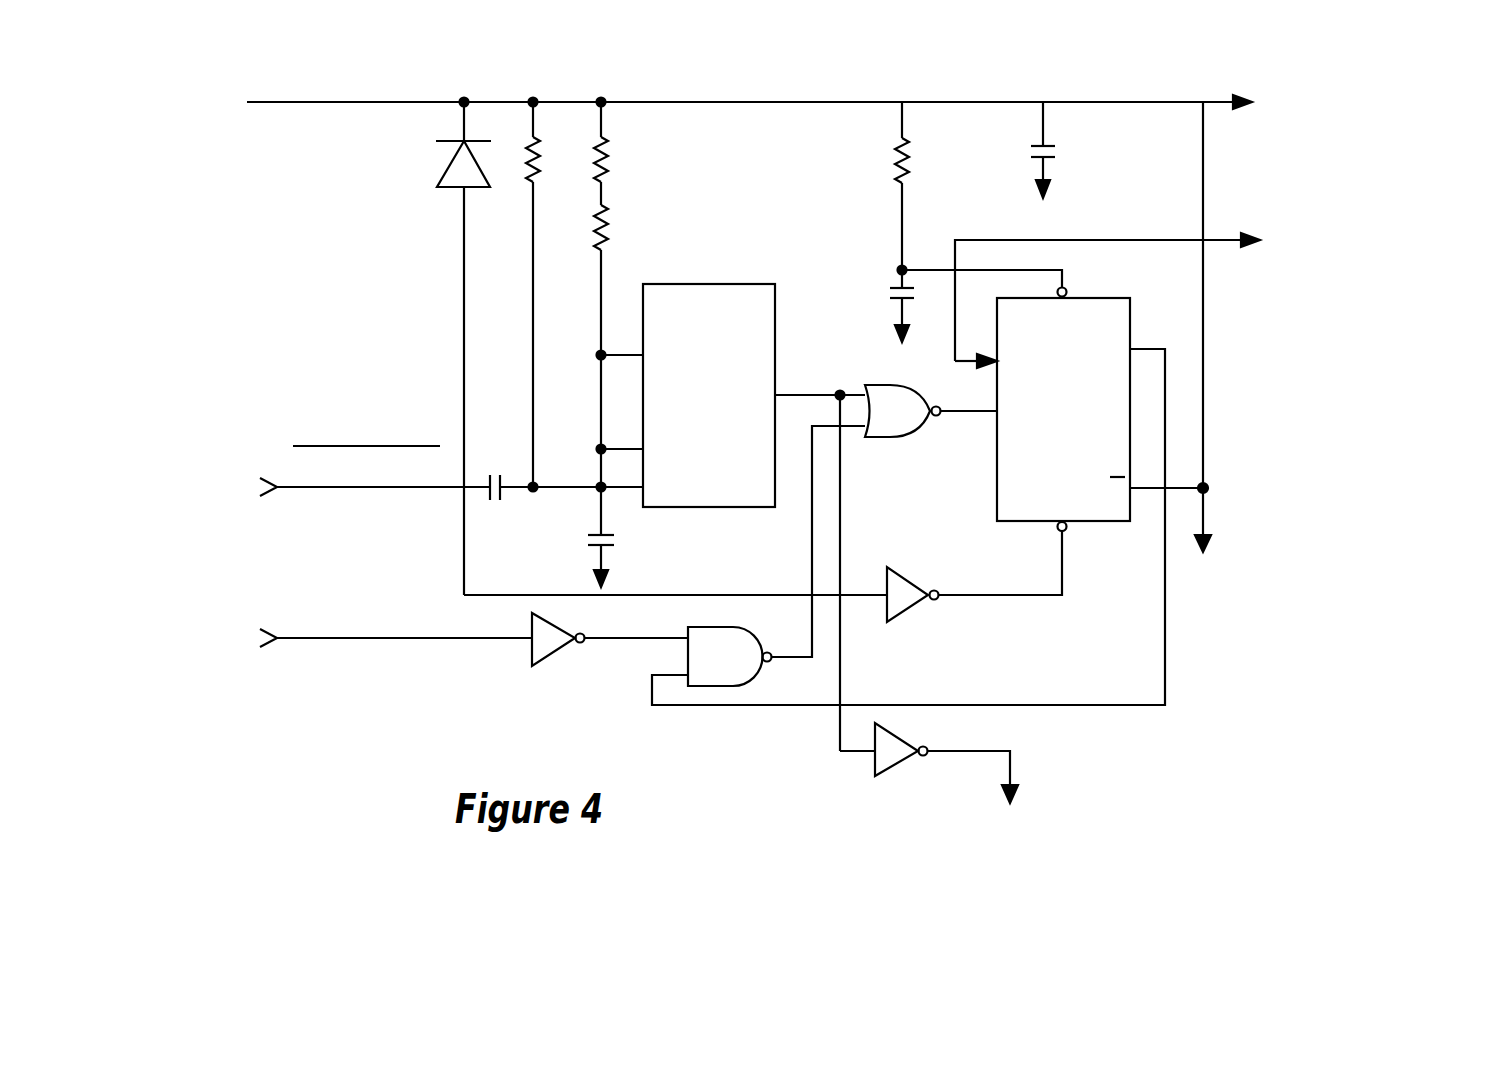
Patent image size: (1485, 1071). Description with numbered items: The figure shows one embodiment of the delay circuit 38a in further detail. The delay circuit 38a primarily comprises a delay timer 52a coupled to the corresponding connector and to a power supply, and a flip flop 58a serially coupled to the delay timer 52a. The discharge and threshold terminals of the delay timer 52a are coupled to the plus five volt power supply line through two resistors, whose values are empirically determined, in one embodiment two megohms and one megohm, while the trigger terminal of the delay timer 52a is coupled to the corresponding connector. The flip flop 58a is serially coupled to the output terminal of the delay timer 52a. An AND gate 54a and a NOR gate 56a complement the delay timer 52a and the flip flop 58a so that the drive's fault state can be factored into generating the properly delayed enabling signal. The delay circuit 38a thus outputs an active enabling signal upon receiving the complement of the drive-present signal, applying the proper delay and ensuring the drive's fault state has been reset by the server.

The delay circuit 38a is at (427, 731).
The delay timer 52a is at (777, 297).
The AND gate 54a is at (758, 640).
The NOR gate 56a is at (903, 384).
The flip flop 58a is at (1128, 296).